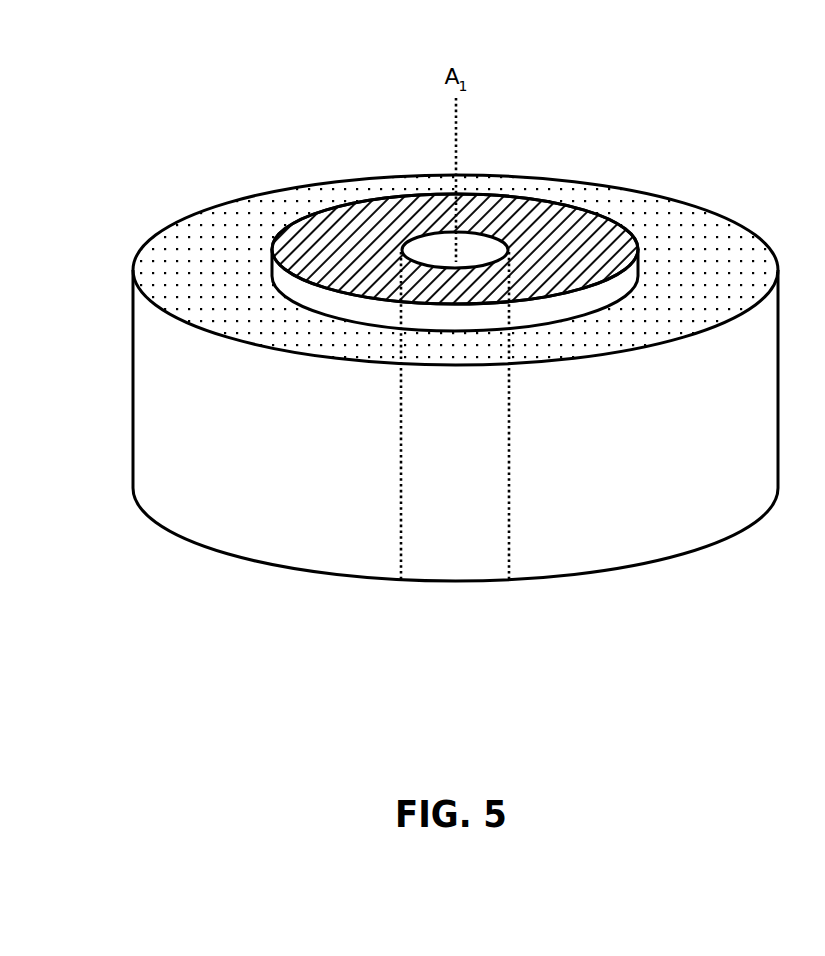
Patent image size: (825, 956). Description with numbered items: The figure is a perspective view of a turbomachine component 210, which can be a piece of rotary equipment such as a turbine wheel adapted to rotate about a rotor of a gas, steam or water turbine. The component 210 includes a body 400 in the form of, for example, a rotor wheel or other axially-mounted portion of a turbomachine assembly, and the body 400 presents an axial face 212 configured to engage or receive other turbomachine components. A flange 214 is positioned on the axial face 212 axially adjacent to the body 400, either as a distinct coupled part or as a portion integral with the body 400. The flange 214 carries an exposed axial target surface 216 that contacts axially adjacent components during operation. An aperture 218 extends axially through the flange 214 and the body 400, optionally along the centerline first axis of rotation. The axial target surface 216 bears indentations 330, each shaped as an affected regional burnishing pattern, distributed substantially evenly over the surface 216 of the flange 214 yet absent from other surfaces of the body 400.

The turbomachine component 210 is at (424, 369).
The axial face 212 is at (215, 238).
The flange 214 is at (350, 314).
The axial target surface 216 is at (543, 198).
The aperture 218 is at (423, 243).
The indentations 330 is at (332, 230).
The body 400 is at (276, 495).